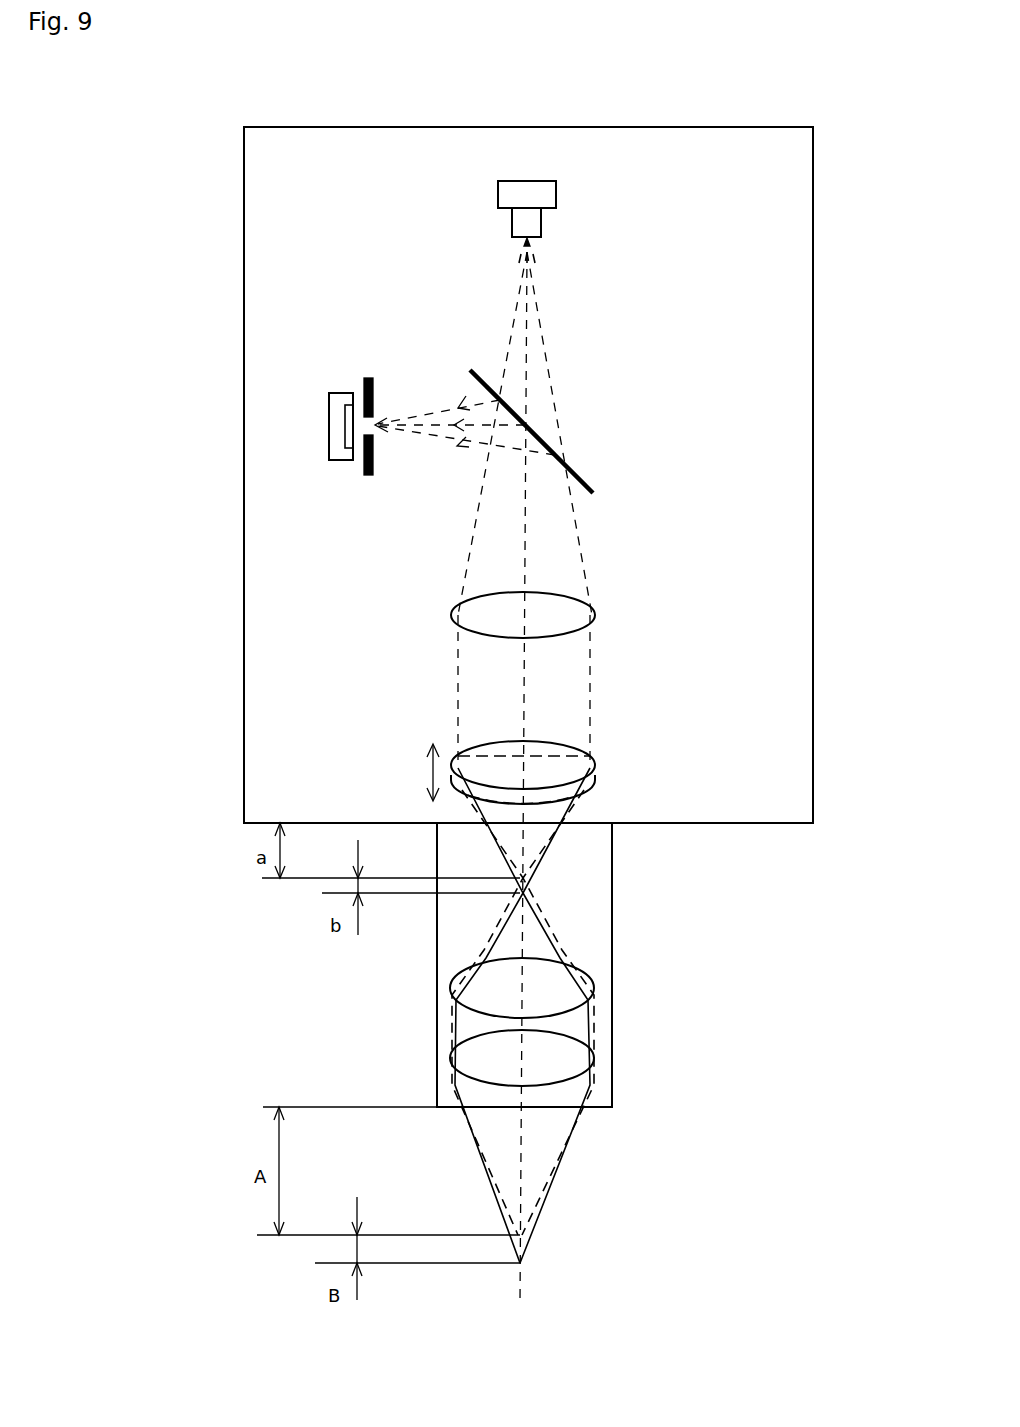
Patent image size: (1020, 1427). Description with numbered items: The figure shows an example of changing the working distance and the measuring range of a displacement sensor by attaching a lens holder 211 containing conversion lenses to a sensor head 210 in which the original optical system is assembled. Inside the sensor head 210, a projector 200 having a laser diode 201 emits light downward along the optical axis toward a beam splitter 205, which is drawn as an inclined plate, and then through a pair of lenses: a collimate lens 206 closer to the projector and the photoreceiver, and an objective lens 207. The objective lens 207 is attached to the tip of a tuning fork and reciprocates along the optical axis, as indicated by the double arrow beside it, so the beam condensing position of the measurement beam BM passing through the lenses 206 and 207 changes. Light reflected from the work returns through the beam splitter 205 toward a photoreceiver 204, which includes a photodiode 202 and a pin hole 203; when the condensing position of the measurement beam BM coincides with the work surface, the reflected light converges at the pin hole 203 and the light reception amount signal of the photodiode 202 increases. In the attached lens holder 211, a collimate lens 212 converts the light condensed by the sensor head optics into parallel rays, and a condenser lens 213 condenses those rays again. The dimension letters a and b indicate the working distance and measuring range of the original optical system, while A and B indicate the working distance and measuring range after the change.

The projector 200 is at (563, 175).
The laser diode 201 is at (541, 222).
The photodiode 202 is at (330, 448).
The pin hole 203 is at (368, 478).
The photoreceiver 204 is at (396, 546).
The beam splitter 205 is at (581, 474).
The collimate lens 206 is at (592, 602).
The objective lens 207 is at (592, 762).
The sensor head 210 is at (703, 108).
The lens holder 211 is at (612, 862).
The collimate lens 212 is at (594, 985).
The condenser lens 213 is at (594, 1058).
The measurement beam BM is at (548, 1186).